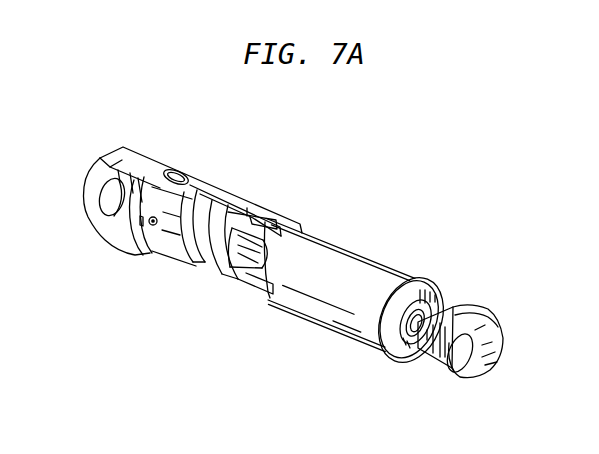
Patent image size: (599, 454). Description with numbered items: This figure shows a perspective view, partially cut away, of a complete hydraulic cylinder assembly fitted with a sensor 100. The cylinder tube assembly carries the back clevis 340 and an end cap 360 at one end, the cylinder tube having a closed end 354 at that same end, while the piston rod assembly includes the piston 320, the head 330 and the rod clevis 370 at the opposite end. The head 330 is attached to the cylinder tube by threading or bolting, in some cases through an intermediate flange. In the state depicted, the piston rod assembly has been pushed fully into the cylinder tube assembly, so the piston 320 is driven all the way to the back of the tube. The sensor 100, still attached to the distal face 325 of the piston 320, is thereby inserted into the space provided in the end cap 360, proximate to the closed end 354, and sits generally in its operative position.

The sensor 100 is at (170, 205).
The piston 320 is at (258, 208).
The distal face 325 is at (193, 253).
The head 330 is at (441, 290).
The back clevis 340 is at (92, 215).
The closed end 354 is at (230, 174).
The end cap 360 is at (144, 249).
The rod clevis 370 is at (447, 383).